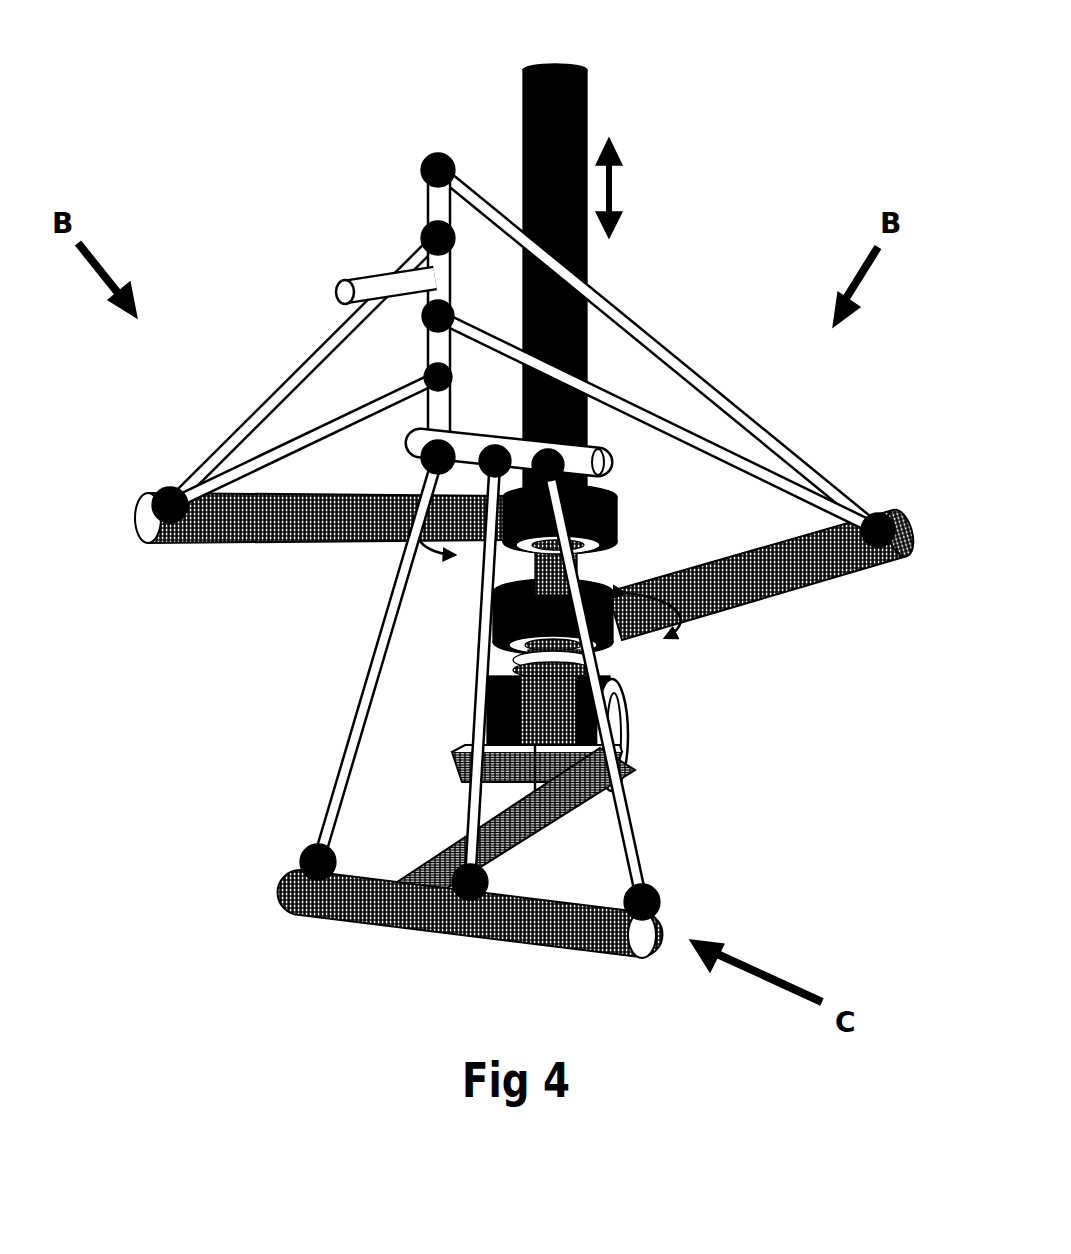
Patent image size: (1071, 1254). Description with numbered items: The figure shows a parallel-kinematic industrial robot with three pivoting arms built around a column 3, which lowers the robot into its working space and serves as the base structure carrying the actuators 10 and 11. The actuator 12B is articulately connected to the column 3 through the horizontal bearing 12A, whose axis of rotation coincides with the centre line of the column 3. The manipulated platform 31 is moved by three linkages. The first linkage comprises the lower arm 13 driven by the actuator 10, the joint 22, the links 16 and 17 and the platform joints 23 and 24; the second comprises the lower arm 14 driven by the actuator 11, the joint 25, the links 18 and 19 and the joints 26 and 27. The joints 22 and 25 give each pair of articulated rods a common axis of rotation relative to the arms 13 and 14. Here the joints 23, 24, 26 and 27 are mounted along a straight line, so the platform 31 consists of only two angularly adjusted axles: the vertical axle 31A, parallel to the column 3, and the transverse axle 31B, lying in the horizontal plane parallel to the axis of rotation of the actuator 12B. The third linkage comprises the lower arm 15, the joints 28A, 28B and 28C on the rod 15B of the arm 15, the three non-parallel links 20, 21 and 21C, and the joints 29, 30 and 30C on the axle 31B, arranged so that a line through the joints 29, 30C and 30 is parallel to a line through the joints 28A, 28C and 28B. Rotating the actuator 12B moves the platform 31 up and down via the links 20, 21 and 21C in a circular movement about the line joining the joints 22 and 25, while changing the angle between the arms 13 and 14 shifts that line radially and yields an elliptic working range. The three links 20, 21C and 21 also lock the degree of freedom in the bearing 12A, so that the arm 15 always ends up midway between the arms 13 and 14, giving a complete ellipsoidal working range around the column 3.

The column 3 is at (587, 92).
The actuator 10 is at (620, 519).
The actuator 11 is at (615, 645).
The horizontal bearing 12A is at (612, 663).
The actuator 12B is at (618, 690).
The lower arm 13 is at (240, 520).
The lower arm 14 is at (760, 590).
The lower arm 15 is at (450, 852).
The rod 15B is at (520, 898).
The link 16 is at (342, 352).
The link 17 is at (350, 410).
The link 18 is at (655, 338).
The link 19 is at (668, 430).
The link 20 is at (408, 575).
The link 21 is at (625, 806).
The link 21C is at (478, 680).
The joint 22 is at (165, 498).
The joint 23 is at (425, 235).
The joint 24 is at (428, 375).
The joint 25 is at (880, 505).
The joint 26 is at (445, 160).
The joint 27 is at (452, 312).
The joint 28A is at (305, 855).
The joint 28B is at (660, 896).
The joint 28C is at (428, 925).
The joint 29 is at (432, 478).
The joint 30 is at (565, 468).
The joint 30C is at (480, 477).
The manipulated platform 31 is at (372, 285).
The vertical axle 31A is at (432, 200).
The angularly adjusted axle 31B is at (418, 443).